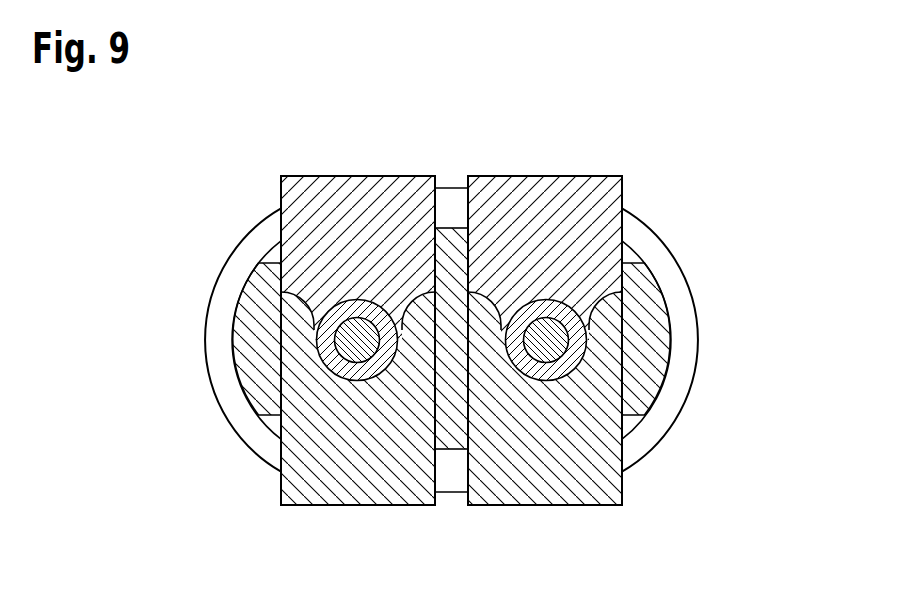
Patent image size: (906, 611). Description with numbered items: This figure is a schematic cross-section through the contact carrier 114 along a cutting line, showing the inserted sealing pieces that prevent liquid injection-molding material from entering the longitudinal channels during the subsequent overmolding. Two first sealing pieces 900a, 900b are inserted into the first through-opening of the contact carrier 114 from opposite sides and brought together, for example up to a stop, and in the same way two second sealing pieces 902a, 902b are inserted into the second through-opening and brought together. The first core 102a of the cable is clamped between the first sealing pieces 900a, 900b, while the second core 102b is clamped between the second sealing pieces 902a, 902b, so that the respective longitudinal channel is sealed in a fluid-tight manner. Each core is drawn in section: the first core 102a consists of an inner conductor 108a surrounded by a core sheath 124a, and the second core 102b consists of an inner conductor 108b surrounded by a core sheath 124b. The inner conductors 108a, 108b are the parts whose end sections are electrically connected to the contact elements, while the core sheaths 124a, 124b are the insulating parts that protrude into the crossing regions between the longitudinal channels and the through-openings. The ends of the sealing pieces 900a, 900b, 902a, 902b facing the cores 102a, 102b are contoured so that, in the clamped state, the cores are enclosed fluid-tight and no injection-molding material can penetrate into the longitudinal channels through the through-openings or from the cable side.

The first sealing piece 900a is at (551, 176).
The first sealing piece 900b is at (542, 505).
The second sealing piece 902a is at (352, 176).
The second sealing piece 902b is at (358, 505).
The core sheath 124a is at (566, 301).
The core sheath 124b is at (336, 302).
The inner conductor 108a is at (568, 334).
The inner conductor 108b is at (335, 333).
The first core 102a is at (583, 367).
The second core 102b is at (322, 365).
The contact carrier 114 is at (682, 268).